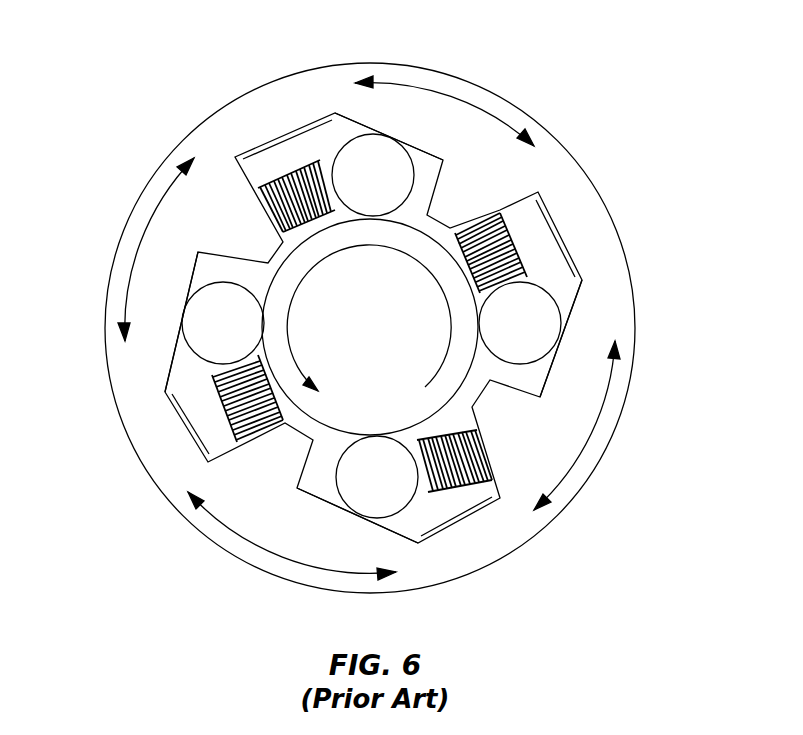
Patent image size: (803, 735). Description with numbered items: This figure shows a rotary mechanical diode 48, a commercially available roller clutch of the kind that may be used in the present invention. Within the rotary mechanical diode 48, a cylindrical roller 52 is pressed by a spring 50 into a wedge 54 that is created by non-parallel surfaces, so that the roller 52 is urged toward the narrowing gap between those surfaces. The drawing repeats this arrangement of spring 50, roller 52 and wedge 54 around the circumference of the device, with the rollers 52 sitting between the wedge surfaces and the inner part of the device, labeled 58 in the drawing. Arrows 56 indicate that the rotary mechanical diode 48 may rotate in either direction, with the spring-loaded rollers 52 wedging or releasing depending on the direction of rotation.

The rotary mechanical diode 48 is at (662, 58).
The spring 50 is at (379, 338).
The cylindrical roller 52 is at (381, 336).
The wedge 54 is at (369, 343).
The arrow 56 is at (356, 308).
The hub 58 is at (281, 289).